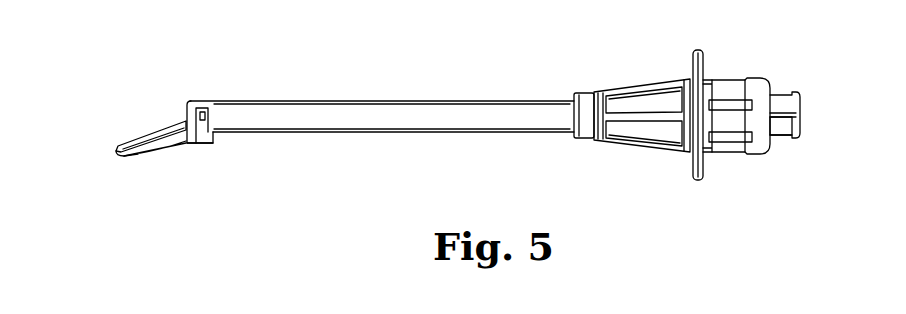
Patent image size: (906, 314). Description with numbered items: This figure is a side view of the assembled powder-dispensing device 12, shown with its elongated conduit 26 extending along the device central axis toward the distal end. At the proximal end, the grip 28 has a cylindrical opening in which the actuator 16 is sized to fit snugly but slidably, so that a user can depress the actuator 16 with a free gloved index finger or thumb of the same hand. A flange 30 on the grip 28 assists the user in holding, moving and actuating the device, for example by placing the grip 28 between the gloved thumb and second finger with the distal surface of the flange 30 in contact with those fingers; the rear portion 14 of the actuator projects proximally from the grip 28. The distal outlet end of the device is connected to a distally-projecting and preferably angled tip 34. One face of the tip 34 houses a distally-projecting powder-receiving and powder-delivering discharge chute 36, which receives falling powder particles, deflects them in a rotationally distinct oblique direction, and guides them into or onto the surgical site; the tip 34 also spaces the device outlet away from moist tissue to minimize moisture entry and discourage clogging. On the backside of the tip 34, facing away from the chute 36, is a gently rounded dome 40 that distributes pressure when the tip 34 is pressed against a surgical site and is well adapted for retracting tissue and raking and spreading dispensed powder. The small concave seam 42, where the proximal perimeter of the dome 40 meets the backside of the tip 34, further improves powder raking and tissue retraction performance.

The hub body 12 is at (762, 80).
The connector tip 14 is at (800, 105).
The actuator 16 is at (782, 132).
The conduit 26 is at (416, 112).
The grip 28 is at (648, 100).
The flange 30 is at (692, 62).
The tip 34 is at (172, 145).
The discharge chute 36 is at (156, 122).
The dome 40 is at (120, 157).
The concave seam 42 is at (139, 151).